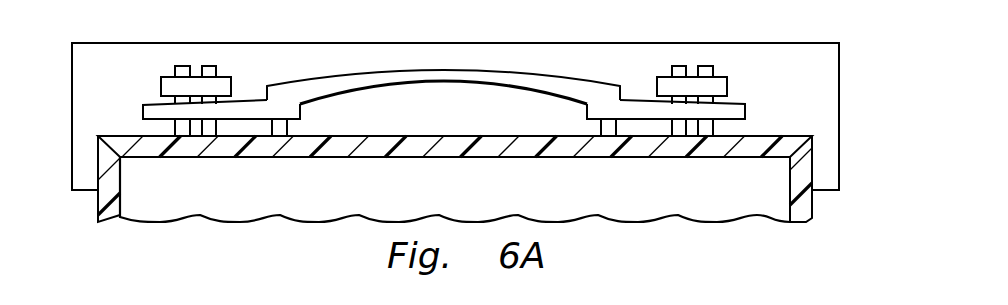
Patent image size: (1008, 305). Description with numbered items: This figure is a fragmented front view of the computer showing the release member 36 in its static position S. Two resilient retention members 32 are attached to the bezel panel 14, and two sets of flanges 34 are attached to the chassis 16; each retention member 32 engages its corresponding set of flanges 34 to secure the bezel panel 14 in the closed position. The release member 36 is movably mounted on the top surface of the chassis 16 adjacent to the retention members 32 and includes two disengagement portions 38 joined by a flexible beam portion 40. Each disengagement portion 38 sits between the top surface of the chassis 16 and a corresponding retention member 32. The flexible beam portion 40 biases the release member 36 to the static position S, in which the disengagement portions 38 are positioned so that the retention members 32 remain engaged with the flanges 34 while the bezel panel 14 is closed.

The bezel panel 14 is at (840, 116).
The chassis 16 is at (808, 203).
The resilient retention member 32 is at (727, 84).
The flanges 34 is at (704, 66).
The release member 36 is at (342, 74).
The disengagement portion 38 is at (745, 108).
The flexible beam portion 40 is at (522, 80).
The static position S is at (444, 70).